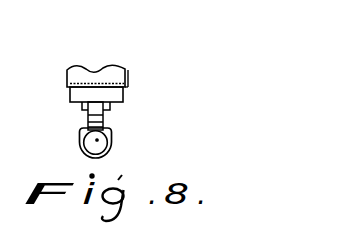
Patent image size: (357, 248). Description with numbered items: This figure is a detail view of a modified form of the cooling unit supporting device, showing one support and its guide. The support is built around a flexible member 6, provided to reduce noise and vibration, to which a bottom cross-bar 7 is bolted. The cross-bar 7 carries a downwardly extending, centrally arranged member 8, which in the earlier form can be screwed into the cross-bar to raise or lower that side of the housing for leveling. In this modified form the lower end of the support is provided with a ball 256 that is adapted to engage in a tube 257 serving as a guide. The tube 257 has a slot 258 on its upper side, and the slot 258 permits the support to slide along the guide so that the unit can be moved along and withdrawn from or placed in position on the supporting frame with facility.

The flexible member 6 is at (111, 77).
The bottom cross-bar 7 is at (116, 93).
The downwardly extending centrally arranged member 8 is at (88, 118).
The slots 258 is at (103, 120).
The balls 256 is at (100, 139).
The tubes 257 is at (112, 151).